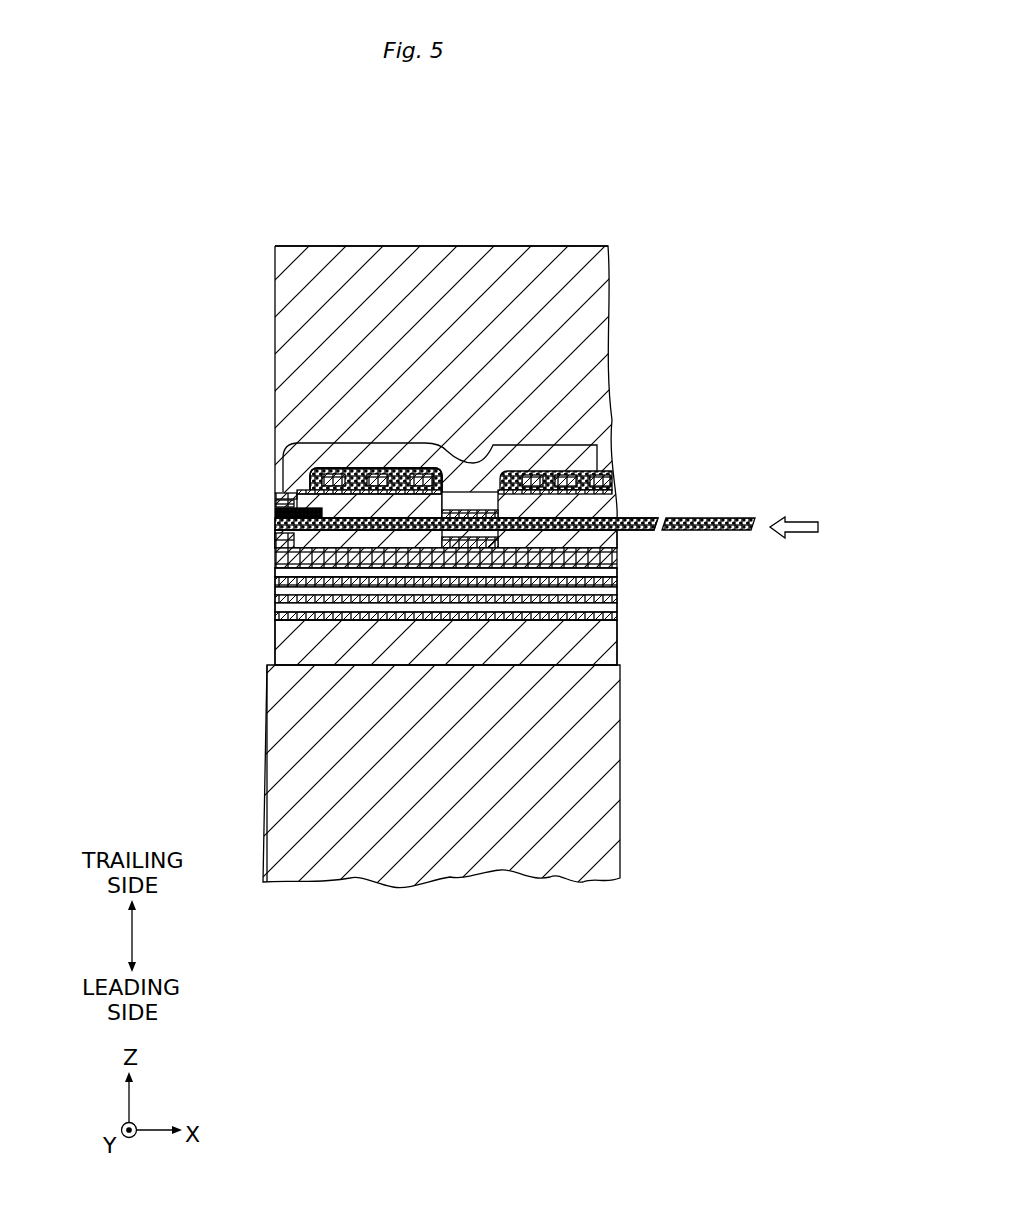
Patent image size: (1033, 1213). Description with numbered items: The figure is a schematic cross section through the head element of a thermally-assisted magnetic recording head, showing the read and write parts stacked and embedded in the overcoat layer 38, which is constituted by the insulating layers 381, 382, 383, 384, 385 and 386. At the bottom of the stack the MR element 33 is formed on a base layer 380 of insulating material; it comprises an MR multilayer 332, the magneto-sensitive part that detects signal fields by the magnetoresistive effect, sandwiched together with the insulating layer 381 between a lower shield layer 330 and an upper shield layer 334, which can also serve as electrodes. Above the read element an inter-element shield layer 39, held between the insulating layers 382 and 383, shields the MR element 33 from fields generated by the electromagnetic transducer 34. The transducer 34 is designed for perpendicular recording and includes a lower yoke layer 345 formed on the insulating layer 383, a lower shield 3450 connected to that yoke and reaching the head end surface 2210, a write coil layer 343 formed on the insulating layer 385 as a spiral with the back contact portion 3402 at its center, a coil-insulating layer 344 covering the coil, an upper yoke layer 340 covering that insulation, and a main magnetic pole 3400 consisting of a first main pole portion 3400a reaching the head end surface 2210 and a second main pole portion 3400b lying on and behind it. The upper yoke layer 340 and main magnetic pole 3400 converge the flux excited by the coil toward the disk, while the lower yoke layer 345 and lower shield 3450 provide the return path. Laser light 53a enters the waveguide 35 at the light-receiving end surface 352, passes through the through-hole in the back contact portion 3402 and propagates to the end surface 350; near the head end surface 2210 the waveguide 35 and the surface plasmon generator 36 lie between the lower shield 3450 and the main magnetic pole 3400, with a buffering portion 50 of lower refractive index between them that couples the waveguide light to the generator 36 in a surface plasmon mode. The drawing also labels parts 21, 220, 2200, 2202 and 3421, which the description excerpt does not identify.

The thin-film magnetic head 21 is at (324, 166).
The overcoat layer 38 is at (287, 327).
The insulating layer 386 is at (560, 267).
The head end surface 2210 is at (277, 293).
The upper yoke layer 340 is at (303, 450).
The electromagnetic transducer 34 is at (98, 382).
The main magnetic pole 3400 is at (173, 428).
The second main pole portion 3400b is at (276, 496).
The first main pole portion 3400a is at (276, 503).
The coil-insulating layer 344 is at (357, 472).
The write coil layer 343 is at (368, 483).
The coil conductor 3421 is at (322, 468).
The insulating layer 385 is at (395, 502).
The back contact portion 3402 is at (470, 500).
The surface plasmon generator 36 is at (276, 512).
The end surface 350 is at (276, 524).
The waveguide 35 is at (350, 522).
The light-receiving end surface 352 is at (757, 528).
The laser light 53a is at (795, 525).
The buffering portion 50 is at (313, 533).
The insulating layer 384 is at (388, 540).
The lower shield 3450 is at (276, 541).
The lower yoke layer 345 is at (276, 560).
The inter-element shield layer 39 is at (276, 582).
The insulating layer 383 is at (427, 573).
The upper shield layer 334 is at (276, 598).
The insulating layer 382 is at (480, 590).
The MR multilayer 332 is at (276, 608).
The insulating layer 381 is at (517, 602).
The lower shield layer 330 is at (272, 616).
The MR element 33 is at (165, 613).
The insulating underlayer 2202 is at (300, 660).
The base layer 380 is at (558, 652).
The substrate 220 is at (575, 842).
The substrate surface 2200 is at (265, 806).